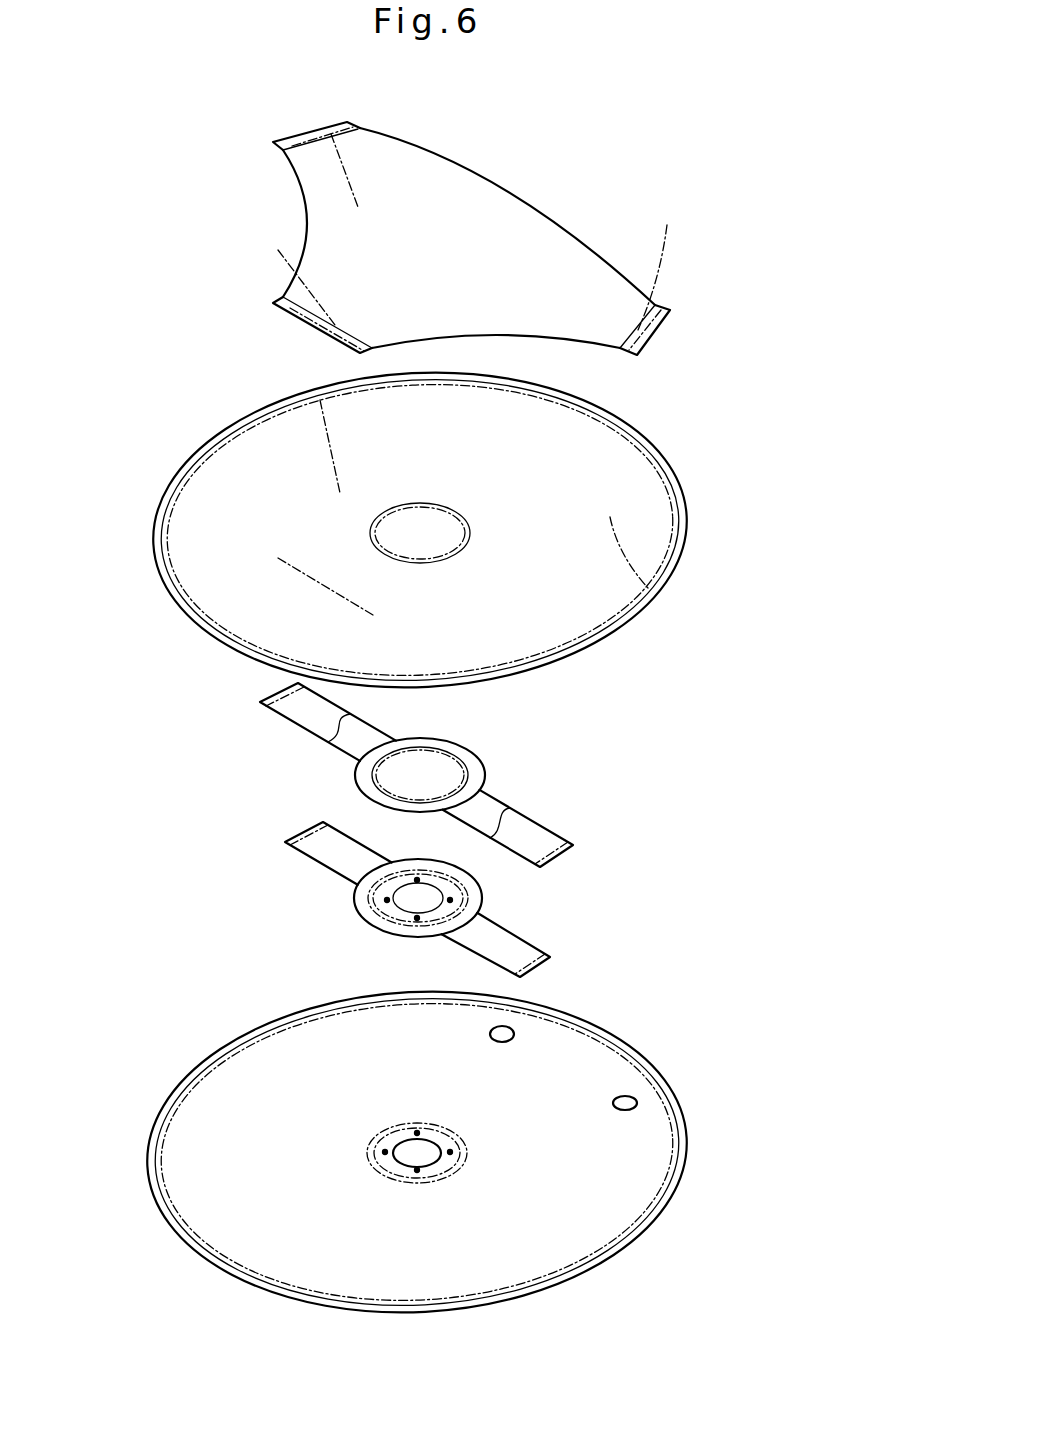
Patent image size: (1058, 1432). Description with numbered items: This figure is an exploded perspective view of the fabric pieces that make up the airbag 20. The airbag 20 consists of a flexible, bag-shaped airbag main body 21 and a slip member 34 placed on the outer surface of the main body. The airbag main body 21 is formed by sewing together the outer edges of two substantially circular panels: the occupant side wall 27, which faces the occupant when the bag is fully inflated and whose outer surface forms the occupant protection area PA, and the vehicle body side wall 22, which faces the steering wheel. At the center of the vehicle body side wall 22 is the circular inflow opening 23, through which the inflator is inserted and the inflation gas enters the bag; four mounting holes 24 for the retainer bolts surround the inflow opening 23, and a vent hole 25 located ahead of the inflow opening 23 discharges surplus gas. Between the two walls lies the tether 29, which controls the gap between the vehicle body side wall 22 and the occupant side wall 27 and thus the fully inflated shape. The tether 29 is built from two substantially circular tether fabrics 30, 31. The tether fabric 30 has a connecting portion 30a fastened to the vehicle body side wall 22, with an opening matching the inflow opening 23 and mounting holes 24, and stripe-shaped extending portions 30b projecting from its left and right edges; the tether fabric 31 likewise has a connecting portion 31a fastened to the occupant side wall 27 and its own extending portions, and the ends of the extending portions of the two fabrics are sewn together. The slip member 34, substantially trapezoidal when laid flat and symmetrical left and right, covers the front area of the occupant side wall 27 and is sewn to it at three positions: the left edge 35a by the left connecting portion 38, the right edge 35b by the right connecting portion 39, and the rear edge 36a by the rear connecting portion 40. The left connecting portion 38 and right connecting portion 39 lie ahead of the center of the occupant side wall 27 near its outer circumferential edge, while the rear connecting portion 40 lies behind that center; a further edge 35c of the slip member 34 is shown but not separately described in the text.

The airbag 20 is at (758, 228).
The airbag main body 21 is at (102, 780).
The vehicle body side wall 22 is at (192, 1030).
The inflow opening 23 is at (425, 1155).
The mounting holes 24 is at (450, 1152).
The vent hole 25 is at (502, 1042).
The occupant side wall 27 is at (192, 643).
The tether 29 is at (665, 767).
The tether fabric 30 is at (555, 940).
The connecting portion 30a is at (363, 917).
The extending portions 30b is at (333, 848).
The tether fabric 31 is at (440, 763).
The connecting portion 31a is at (300, 713).
The slip member 34 is at (577, 210).
The left edge 35a is at (314, 128).
The right edge 35b is at (658, 342).
The side edge 35c is at (487, 180).
The rear edge 36a is at (316, 328).
The left connecting portion 38 is at (347, 331).
The right connecting portion 39 is at (637, 390).
The rear connecting portion 40 is at (278, 250).
The occupant protection area PA is at (592, 627).